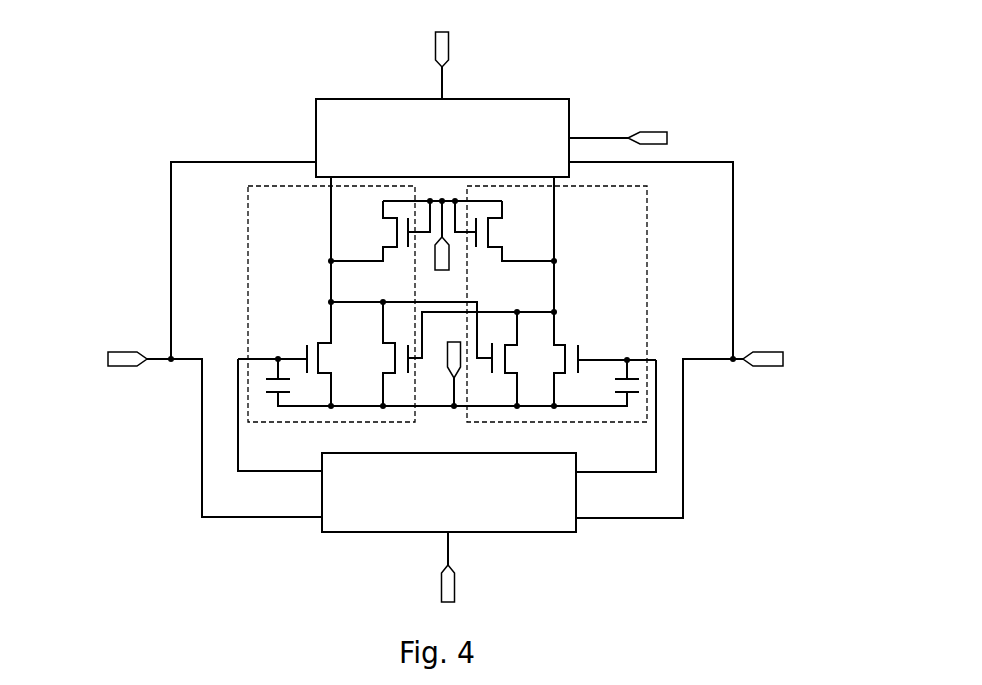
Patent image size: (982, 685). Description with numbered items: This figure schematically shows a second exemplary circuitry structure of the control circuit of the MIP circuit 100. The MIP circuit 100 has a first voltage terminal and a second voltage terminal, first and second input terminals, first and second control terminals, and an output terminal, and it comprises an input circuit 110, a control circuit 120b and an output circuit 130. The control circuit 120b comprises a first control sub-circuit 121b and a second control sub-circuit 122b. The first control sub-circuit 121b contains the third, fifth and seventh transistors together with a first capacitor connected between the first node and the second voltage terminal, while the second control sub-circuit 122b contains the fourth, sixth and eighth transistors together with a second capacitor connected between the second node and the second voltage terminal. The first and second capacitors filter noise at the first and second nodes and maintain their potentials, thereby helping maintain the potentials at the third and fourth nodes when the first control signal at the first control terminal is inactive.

The MIP circuit 100 is at (142, 113).
The input circuit 110 is at (449, 492).
The output circuit 130 is at (442, 138).
The control circuit 120b is at (236, 236).
The first control sub-circuit 121b is at (248, 300).
The second control sub-circuit 122b is at (648, 270).